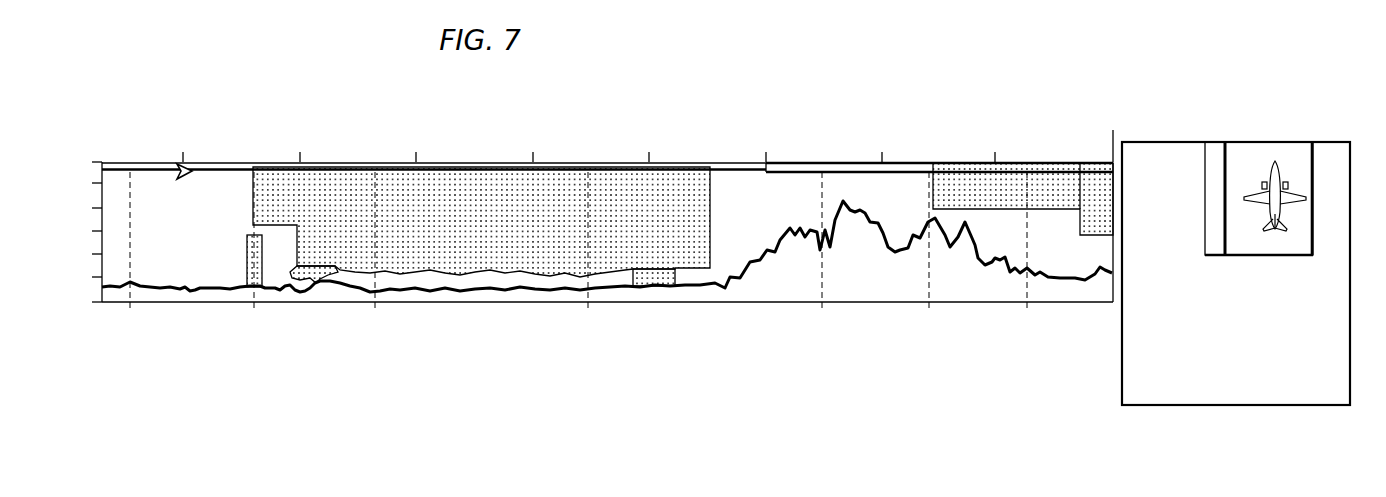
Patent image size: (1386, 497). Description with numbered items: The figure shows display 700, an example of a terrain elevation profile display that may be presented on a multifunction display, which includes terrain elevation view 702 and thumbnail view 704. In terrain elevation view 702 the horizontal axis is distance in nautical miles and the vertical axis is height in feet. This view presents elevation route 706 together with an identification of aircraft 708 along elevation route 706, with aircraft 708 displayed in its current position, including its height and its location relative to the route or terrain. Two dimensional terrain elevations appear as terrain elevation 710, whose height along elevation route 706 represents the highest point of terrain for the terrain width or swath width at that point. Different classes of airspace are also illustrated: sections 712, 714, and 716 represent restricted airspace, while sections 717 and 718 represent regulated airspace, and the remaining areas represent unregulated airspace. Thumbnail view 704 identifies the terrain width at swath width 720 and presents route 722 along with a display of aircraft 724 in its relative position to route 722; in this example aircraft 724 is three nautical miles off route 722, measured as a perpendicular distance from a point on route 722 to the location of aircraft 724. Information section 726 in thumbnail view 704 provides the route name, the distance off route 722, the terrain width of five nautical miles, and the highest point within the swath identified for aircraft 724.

The display 700 is at (854, 76).
The terrain elevation view 702 is at (660, 127).
The thumbnail view 704 is at (1202, 396).
The elevation route 706 is at (222, 176).
The aircraft 708 is at (181, 181).
The terrain elevation 710 is at (837, 275).
The section 712 is at (245, 257).
The section 714 is at (316, 288).
The section 716 is at (657, 281).
The section 717 is at (460, 209).
The section 718 is at (931, 187).
The swath width 720 is at (1198, 180).
The route 722 is at (1222, 200).
The aircraft 724 is at (1282, 158).
The information section 726 is at (1277, 407).